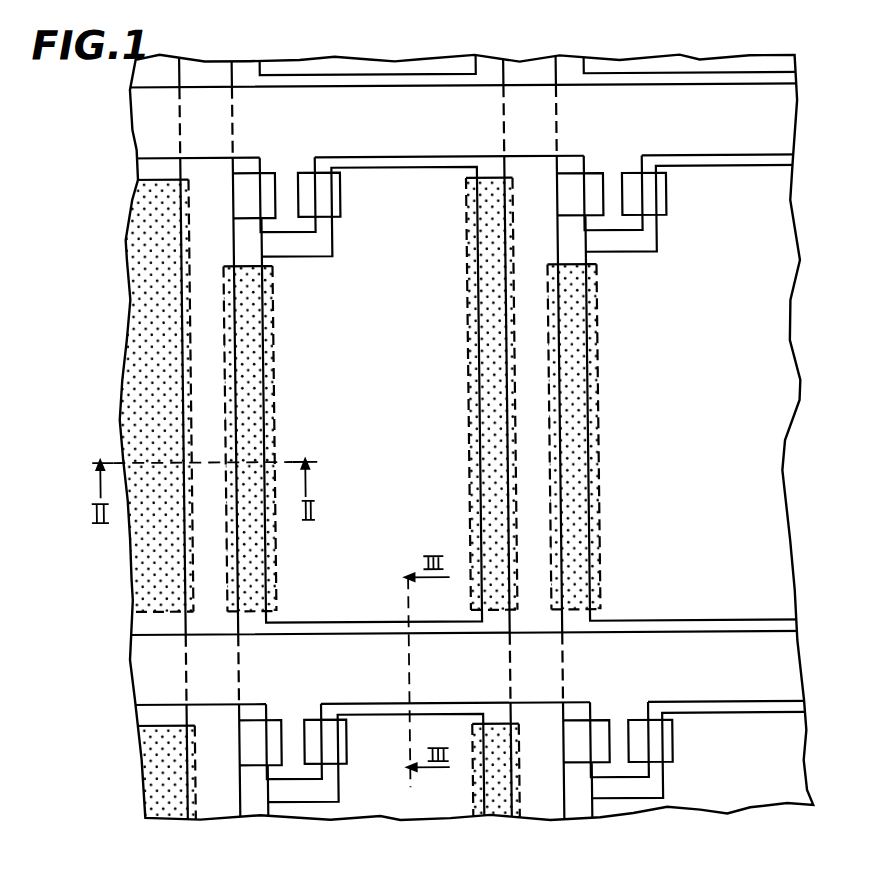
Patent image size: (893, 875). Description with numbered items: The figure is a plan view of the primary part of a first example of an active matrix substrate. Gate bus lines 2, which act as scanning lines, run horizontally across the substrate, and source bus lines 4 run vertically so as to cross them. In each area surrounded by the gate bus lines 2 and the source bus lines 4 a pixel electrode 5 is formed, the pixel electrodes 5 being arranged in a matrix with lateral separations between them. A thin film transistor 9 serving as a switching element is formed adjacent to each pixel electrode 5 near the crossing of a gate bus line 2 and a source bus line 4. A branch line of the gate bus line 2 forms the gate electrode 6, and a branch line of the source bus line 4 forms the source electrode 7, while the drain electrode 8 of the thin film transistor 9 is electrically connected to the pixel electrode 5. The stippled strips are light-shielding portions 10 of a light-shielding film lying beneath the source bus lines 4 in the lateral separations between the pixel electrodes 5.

The gate bus line 2 is at (379, 124).
The source bus line 4 is at (208, 573).
The pixel electrode 5 is at (305, 389).
The gate electrode 6 is at (378, 383).
The source electrode 7 is at (251, 196).
The drain electrode 8 is at (325, 181).
The thin film transistor 9 is at (250, 227).
The light-shielding portion 10 is at (243, 339).